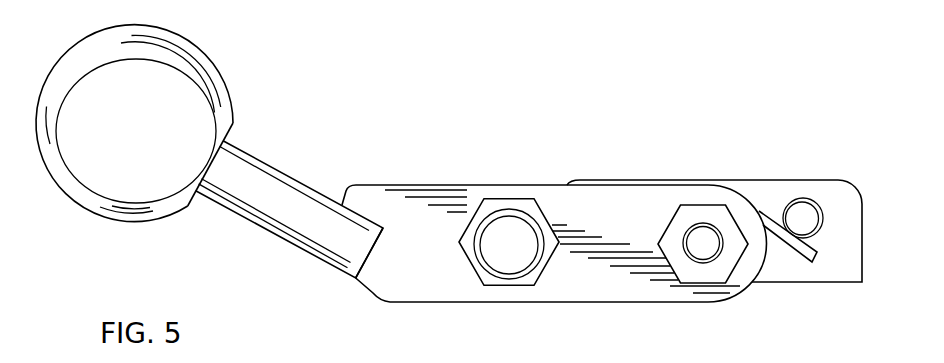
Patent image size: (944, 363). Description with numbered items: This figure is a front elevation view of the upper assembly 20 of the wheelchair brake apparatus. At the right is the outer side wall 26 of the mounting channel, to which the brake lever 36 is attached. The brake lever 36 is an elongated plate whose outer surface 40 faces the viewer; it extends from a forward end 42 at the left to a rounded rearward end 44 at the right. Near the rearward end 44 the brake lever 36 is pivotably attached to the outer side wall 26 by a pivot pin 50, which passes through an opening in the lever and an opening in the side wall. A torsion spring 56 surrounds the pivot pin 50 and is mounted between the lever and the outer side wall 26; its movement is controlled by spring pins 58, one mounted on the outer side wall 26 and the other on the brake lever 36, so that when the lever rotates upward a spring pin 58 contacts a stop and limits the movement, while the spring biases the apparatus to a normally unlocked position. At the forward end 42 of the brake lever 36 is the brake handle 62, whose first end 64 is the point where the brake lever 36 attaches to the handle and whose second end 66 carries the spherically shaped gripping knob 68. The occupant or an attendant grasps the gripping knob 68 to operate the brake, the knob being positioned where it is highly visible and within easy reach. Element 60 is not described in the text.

The upper assembly 20 is at (408, 82).
The outer side wall 26 is at (790, 179).
The brake lever 36 is at (408, 185).
The outer surface 40 is at (450, 223).
The forward end 42 is at (346, 199).
The rearward end 44 is at (731, 184).
The pivot pin 50 is at (701, 251).
The torsion spring 56 is at (813, 257).
The spring pin 58 is at (813, 200).
The bore 60 is at (502, 263).
The brake handle 62 is at (293, 242).
The first end 64 is at (369, 263).
The second end 66 is at (219, 152).
The gripping knob 68 is at (183, 68).